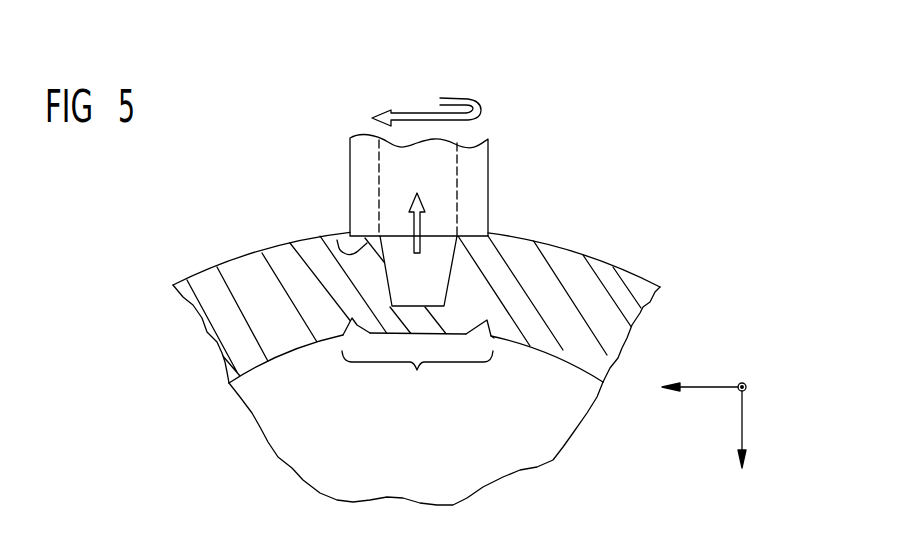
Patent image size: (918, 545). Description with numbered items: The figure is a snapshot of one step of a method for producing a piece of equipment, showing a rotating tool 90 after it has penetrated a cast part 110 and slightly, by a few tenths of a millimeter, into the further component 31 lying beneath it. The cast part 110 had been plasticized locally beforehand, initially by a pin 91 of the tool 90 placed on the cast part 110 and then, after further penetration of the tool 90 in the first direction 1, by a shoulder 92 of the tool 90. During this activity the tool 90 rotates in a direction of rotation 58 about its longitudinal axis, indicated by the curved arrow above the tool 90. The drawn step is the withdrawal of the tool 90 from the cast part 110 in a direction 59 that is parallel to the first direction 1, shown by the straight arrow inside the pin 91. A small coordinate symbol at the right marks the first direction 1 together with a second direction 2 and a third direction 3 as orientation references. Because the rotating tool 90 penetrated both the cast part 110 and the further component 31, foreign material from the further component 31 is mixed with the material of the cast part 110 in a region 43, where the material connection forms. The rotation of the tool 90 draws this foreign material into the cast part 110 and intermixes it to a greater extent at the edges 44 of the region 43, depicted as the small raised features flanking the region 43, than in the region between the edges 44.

The first direction 1 is at (743, 418).
The second coordinate axis 2 is at (748, 384).
The third coordinate axis 3 is at (710, 386).
The further component 31 is at (308, 465).
The region 43 is at (417, 370).
The edges 44 is at (348, 326).
The direction of rotation 58 is at (459, 98).
The direction 59 is at (419, 227).
The tool 90 is at (366, 140).
The pin 91 is at (470, 287).
The shoulder 92 is at (337, 240).
The cast part 110 is at (240, 278).